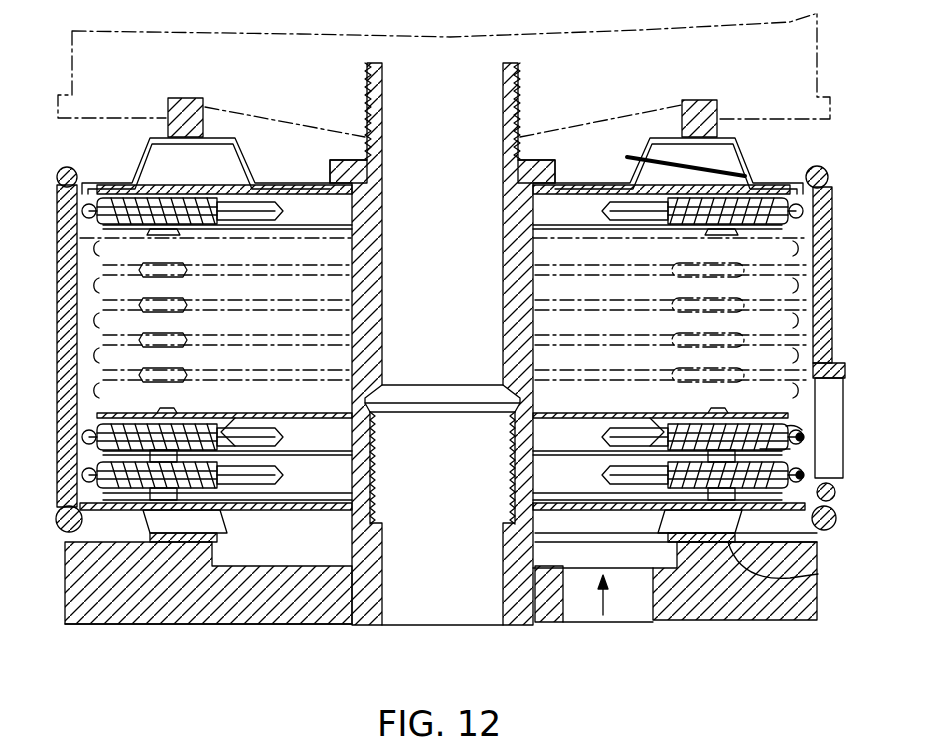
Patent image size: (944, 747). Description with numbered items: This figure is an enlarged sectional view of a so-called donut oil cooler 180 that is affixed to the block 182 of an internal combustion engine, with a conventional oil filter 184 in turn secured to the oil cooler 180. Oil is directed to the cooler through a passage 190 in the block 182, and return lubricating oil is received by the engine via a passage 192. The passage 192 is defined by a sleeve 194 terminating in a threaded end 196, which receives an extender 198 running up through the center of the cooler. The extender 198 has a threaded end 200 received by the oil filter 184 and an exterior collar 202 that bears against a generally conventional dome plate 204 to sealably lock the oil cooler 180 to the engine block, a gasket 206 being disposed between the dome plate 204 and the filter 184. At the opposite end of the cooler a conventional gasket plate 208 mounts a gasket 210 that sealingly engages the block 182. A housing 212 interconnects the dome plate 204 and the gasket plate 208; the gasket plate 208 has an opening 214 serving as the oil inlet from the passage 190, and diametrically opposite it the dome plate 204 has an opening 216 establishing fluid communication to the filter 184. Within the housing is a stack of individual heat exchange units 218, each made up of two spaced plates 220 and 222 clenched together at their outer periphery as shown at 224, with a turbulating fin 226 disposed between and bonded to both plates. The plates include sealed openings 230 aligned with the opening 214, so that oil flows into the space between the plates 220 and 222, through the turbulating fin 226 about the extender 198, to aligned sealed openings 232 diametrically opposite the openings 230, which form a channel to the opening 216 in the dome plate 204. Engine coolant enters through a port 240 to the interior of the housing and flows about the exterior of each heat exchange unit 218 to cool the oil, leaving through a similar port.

The oil cooler 180 is at (834, 258).
The block 182 is at (733, 605).
The oil filter 184 is at (822, 62).
The passage 190 is at (620, 612).
The passage 192 is at (453, 607).
The sleeve 194 is at (388, 608).
The threaded end 196 is at (526, 490).
The extender 198 is at (367, 330).
The threaded end 200 is at (522, 87).
The exterior collar 202 is at (350, 167).
The dome plate 204 is at (242, 150).
The gasket 206 is at (200, 98).
The gasket plate 208 is at (817, 545).
The gasket 210 is at (812, 576).
The housing 212 is at (55, 220).
The opening 214 is at (620, 505).
The opening 216 is at (310, 186).
The heat exchange unit 218 is at (122, 422).
The plate 220 is at (696, 420).
The plate 222 is at (778, 447).
The clenched outer periphery 224 is at (805, 435).
The turbulating fin 226 is at (787, 423).
The sealed openings 230 is at (633, 420).
The sealed openings 232 is at (242, 457).
The port 240 is at (848, 480).